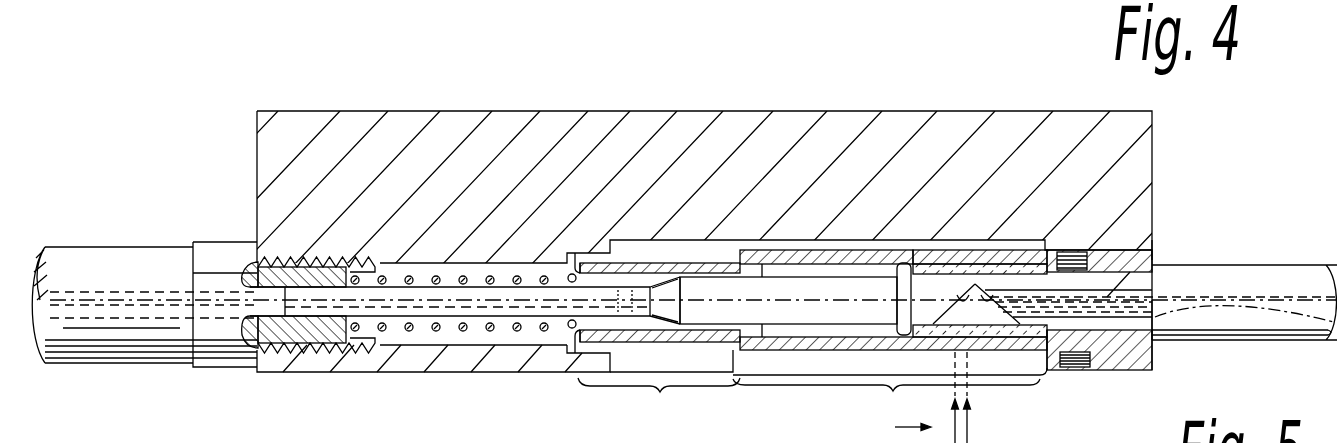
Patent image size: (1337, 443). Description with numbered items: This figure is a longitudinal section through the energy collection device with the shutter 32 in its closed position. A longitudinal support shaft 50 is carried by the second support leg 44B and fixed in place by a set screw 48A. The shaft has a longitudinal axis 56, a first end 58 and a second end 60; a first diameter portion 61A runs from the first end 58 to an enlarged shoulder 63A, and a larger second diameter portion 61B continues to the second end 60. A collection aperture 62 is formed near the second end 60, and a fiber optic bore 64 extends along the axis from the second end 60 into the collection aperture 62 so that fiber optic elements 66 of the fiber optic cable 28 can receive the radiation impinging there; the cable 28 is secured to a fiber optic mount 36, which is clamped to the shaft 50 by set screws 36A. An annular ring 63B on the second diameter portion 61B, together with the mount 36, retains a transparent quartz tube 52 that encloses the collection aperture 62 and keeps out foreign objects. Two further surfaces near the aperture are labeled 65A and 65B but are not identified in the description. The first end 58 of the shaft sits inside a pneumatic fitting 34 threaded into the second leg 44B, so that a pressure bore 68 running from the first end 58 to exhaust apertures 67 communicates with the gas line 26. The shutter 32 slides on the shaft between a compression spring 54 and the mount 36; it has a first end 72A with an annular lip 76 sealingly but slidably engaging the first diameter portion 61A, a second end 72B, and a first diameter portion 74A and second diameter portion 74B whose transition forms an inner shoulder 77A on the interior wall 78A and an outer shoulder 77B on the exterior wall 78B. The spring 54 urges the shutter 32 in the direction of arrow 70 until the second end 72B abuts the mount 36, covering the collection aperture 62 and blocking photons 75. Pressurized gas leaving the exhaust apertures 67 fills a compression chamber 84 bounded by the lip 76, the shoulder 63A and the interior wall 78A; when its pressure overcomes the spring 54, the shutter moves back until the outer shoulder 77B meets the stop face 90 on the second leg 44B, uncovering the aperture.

The gas line 26 is at (110, 253).
The fiber optic cable 28 is at (1269, 276).
The shutter 32 is at (738, 254).
The pneumatic fitting 34 is at (318, 331).
The fiber optic mount 36 is at (1063, 337).
The set screws 36A is at (1142, 232).
The second support leg 44B is at (533, 369).
The set screw 48A is at (1121, 371).
The longitudinal support shaft 50 is at (738, 309).
The transparent tube 52 is at (1044, 332).
The compression spring 54 is at (436, 330).
The longitudinal axis 56 is at (1207, 295).
The first end 58 is at (278, 310).
The second end 60 is at (1152, 318).
The first diameter portion 61A is at (412, 293).
The second diameter portion 61B is at (788, 260).
The collection aperture 62 is at (973, 308).
The shoulder 63A is at (665, 308).
The annular ring 63B is at (904, 262).
The fiber optic bore 64 is at (1244, 319).
The cone surface 65A is at (987, 295).
The cone surface 65B is at (963, 295).
The fiber optic elements 66 is at (1156, 226).
The exhaust apertures 67 is at (638, 278).
The pressure bore 68 is at (522, 303).
The arrow 70 is at (877, 430).
The first end 72A is at (569, 262).
The second end 72B is at (1072, 250).
The first diameter portion 74A is at (659, 398).
The second diameter portion 74B is at (886, 398).
The photons 75 is at (935, 440).
The annular lip 76 is at (582, 346).
The inner shoulder 77A is at (770, 274).
The outer shoulder 77B is at (763, 270).
The interior wall 78A is at (712, 251).
The exterior wall 78B is at (850, 240).
The compression chamber 84 is at (627, 323).
The stop face 90 is at (627, 286).